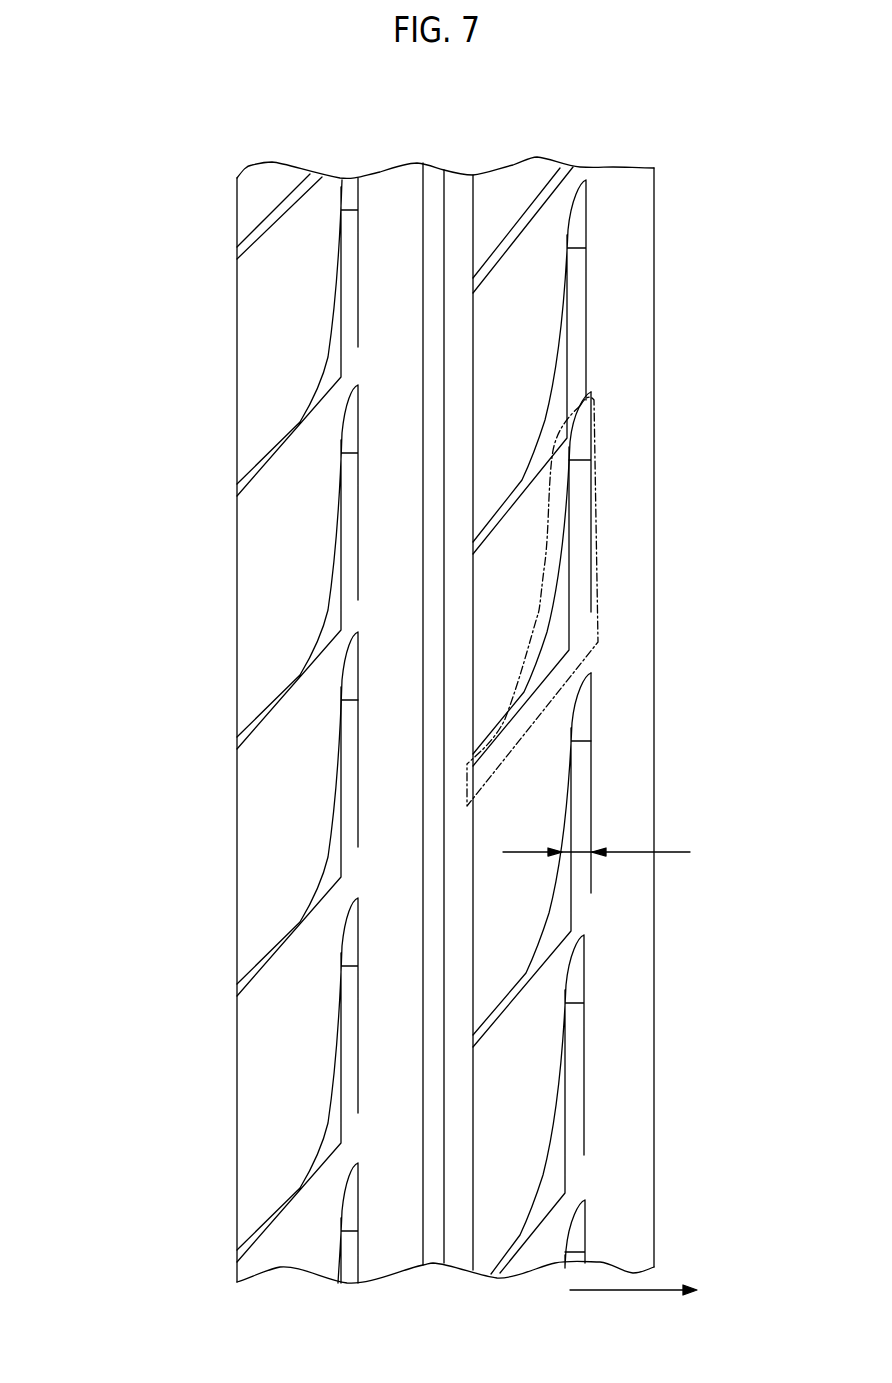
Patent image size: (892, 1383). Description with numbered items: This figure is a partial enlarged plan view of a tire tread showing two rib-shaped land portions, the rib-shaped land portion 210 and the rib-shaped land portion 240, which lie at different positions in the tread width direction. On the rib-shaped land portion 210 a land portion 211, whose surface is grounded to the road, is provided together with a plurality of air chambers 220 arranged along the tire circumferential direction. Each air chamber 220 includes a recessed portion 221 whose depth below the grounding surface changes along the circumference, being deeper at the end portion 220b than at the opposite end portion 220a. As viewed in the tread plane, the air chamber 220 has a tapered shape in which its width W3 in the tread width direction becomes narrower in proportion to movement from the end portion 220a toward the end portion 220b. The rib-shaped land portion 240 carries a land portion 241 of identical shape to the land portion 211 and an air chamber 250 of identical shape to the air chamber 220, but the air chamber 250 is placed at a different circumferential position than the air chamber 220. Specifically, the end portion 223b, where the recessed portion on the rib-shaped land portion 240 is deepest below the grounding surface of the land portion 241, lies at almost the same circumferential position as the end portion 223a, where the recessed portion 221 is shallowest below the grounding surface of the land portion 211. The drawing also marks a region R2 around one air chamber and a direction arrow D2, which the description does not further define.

The rib-shaped land portion 240 is at (338, 150).
The rib-shaped land portion 210 is at (562, 150).
The air chamber 250 is at (328, 551).
The land portion 241 is at (271, 624).
The end portion 223b is at (350, 707).
The recessed portion 221 is at (580, 492).
The reference region R2 is at (594, 504).
The land portion 211 is at (512, 597).
The end portion 223a is at (580, 614).
The end portion 220b is at (592, 698).
The width W3 is at (588, 848).
The air chamber 220 is at (607, 887).
The end portion 220a is at (567, 937).
The tire circumferential direction D2 is at (633, 1306).